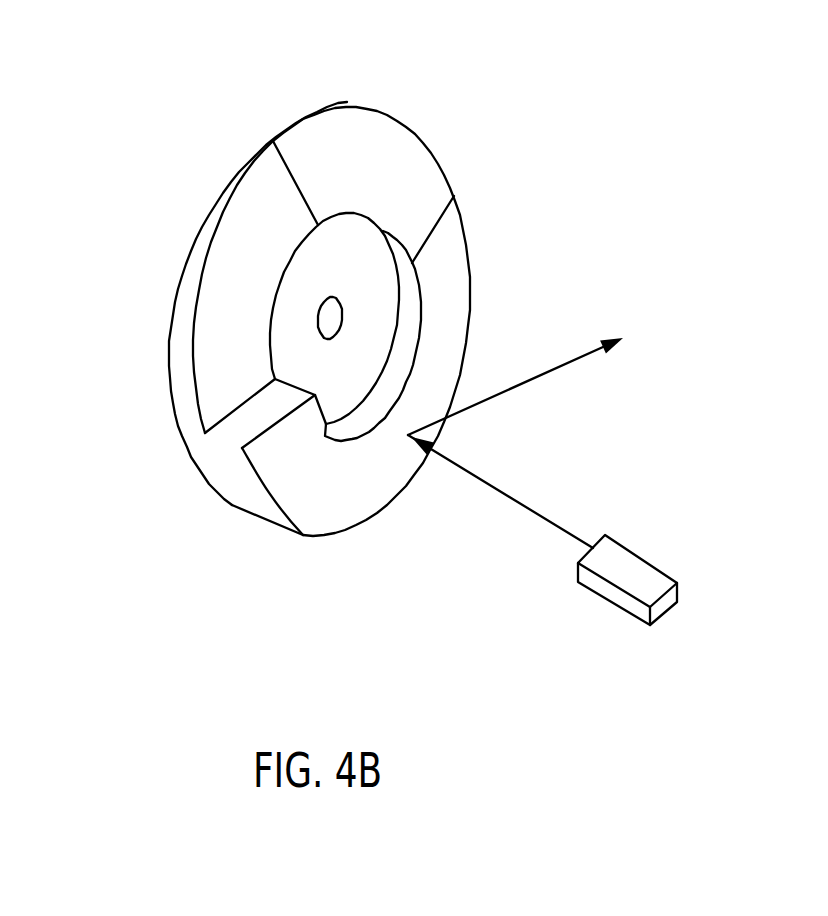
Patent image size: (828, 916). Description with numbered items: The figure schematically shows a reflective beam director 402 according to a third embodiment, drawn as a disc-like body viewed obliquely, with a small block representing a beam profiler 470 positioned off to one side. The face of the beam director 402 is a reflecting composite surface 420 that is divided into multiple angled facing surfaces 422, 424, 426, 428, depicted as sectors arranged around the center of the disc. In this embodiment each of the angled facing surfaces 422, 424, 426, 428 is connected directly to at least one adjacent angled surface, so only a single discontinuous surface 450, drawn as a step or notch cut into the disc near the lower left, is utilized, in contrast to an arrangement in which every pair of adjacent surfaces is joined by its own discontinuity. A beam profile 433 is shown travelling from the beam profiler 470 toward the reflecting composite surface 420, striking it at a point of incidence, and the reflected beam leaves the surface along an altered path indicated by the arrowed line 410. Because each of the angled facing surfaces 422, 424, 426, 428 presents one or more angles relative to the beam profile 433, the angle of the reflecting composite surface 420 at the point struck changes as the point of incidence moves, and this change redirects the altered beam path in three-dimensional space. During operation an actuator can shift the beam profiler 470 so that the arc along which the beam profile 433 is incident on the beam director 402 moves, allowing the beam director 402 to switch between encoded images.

The beam director 402 is at (110, 74).
The light beam 410 is at (490, 397).
The reflecting composite surface 420 is at (443, 168).
The angled facing surface 422 is at (347, 127).
The angled facing surface 424 is at (452, 268).
The angled facing surface 426 is at (327, 517).
The angled facing surface 428 is at (213, 288).
The beam profile 433 is at (548, 523).
The discontinuous surface 450 is at (227, 438).
The beam profiler 470 is at (655, 620).